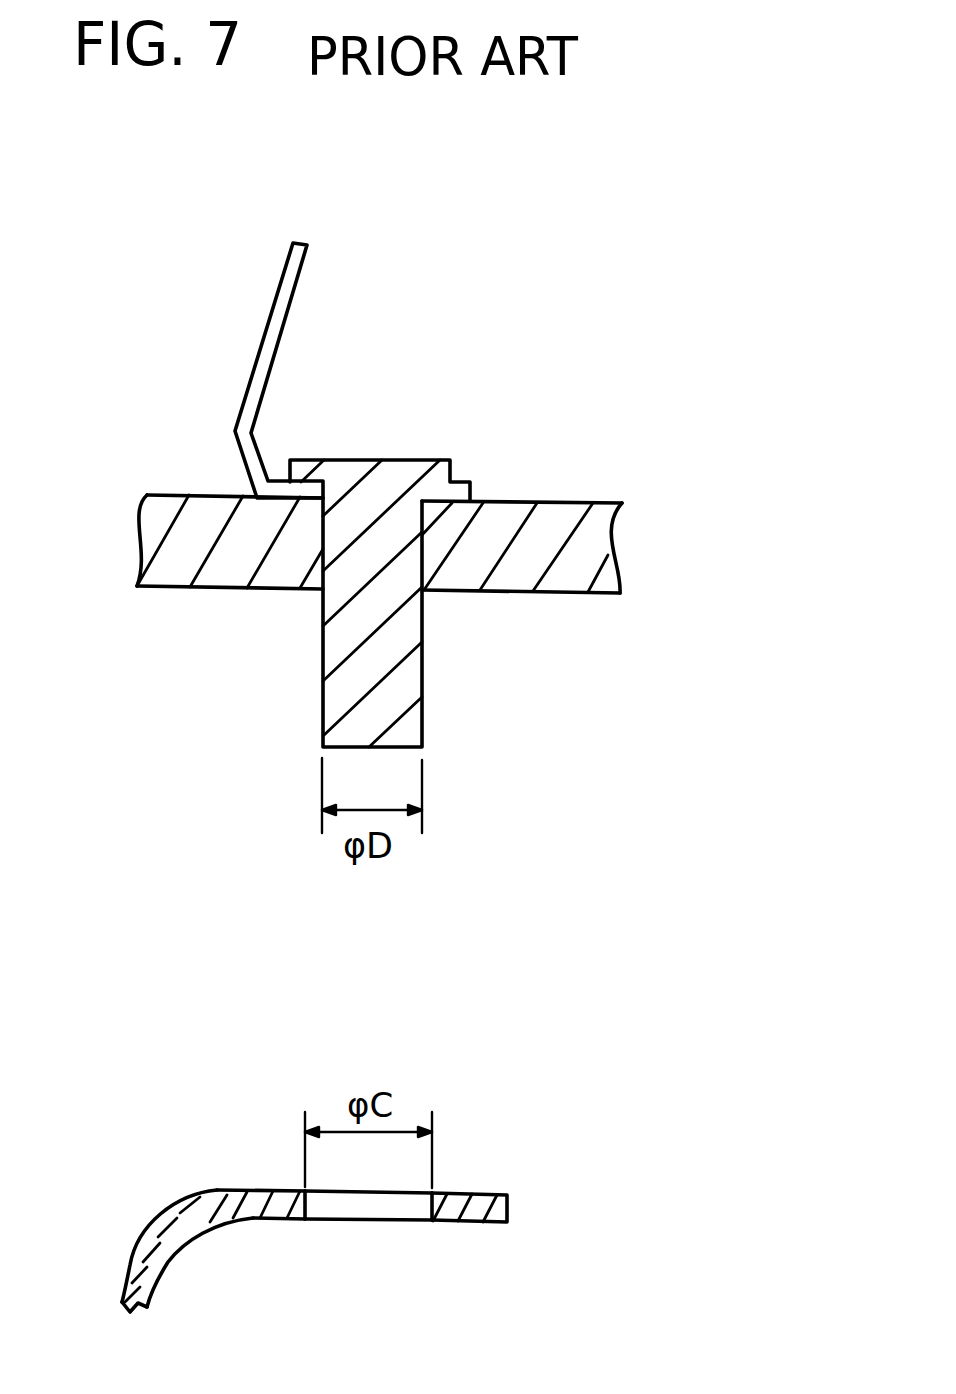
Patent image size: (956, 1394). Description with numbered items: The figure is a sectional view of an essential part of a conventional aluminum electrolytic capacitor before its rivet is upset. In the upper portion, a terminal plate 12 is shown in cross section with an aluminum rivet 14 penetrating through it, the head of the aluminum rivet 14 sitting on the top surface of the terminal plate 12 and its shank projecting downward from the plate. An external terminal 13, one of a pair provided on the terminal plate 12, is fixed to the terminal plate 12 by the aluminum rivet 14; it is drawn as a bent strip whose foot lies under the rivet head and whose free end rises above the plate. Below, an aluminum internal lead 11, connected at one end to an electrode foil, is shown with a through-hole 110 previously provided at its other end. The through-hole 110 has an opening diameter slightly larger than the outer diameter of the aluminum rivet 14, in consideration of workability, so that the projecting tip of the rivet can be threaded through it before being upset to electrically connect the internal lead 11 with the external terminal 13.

The aluminum internal lead 11 is at (143, 1245).
The terminal plate 12 is at (207, 512).
The external terminal 13 is at (268, 327).
The aluminum rivet 14 is at (388, 460).
The through-hole 110 is at (432, 1190).